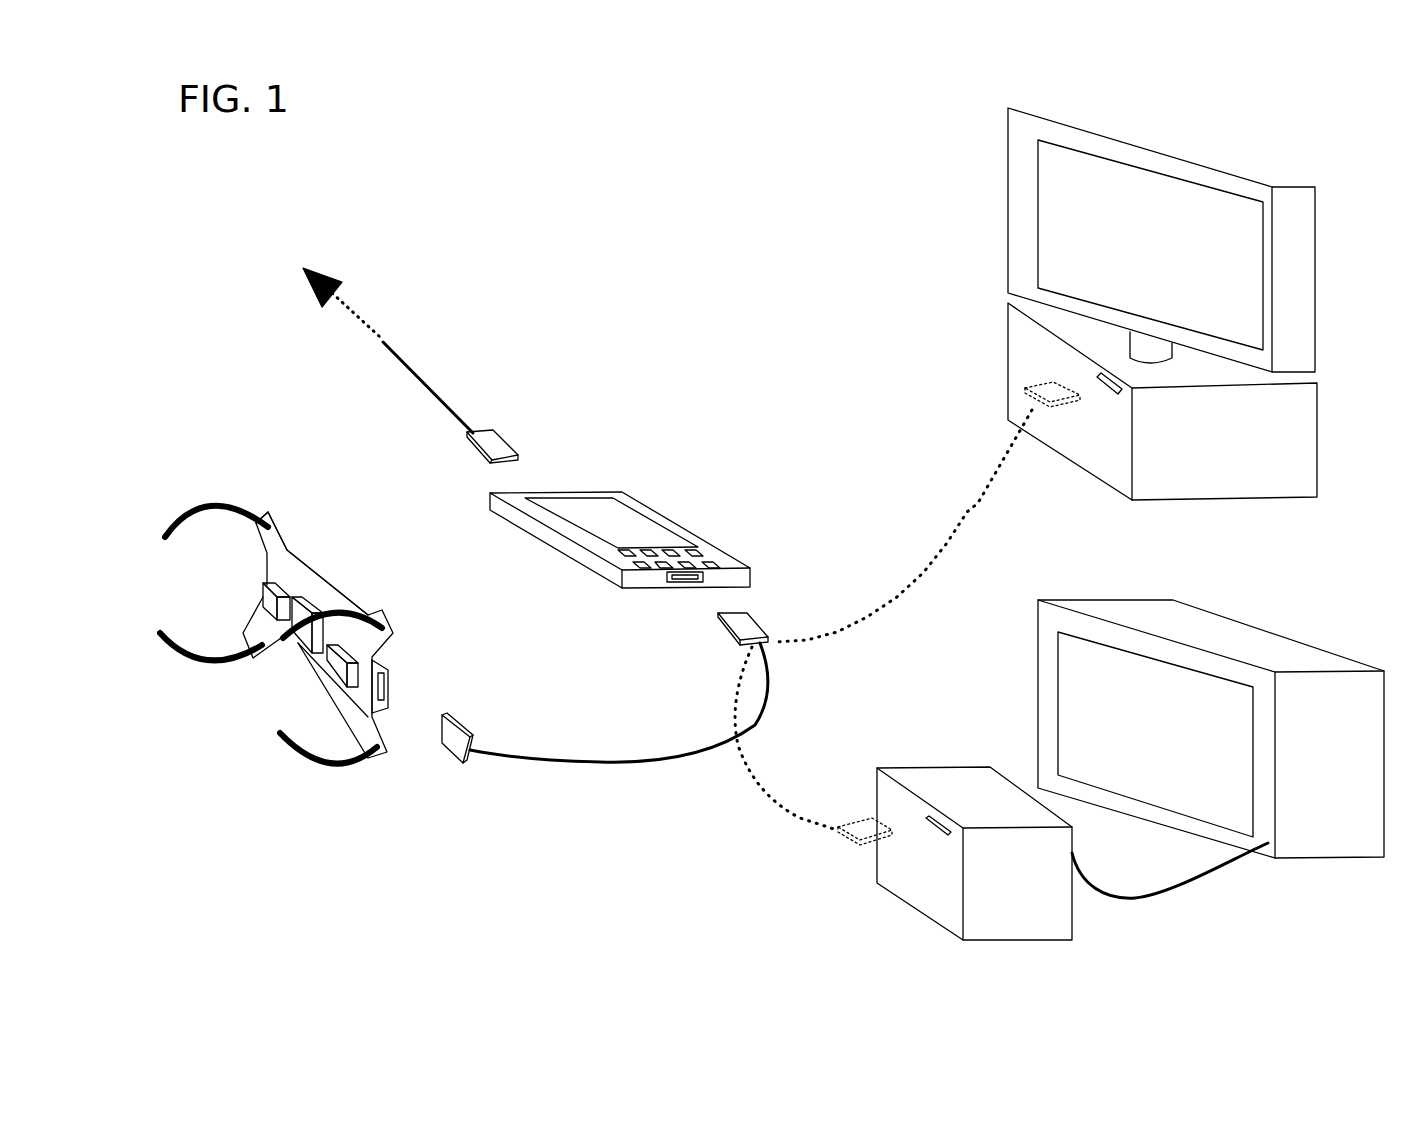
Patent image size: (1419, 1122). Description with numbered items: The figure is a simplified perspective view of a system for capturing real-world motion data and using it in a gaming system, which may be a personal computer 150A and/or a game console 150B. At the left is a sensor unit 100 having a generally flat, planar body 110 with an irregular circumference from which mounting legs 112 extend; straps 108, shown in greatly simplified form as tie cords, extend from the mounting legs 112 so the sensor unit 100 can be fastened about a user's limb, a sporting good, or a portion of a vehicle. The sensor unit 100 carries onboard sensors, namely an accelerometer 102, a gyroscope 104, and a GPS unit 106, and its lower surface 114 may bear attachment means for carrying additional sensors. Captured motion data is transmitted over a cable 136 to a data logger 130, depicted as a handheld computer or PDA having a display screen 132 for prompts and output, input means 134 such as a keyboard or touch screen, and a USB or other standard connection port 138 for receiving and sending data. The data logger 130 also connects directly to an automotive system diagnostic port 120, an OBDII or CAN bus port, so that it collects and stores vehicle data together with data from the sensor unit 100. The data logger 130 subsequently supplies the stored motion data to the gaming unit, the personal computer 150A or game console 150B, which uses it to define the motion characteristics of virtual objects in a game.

The sensor unit 100 is at (263, 450).
The accelerometer 102 is at (337, 672).
The gyroscope 104 is at (303, 633).
The GPS unit 106 is at (263, 598).
The straps 108 is at (215, 507).
The housing body 110 is at (303, 578).
The mounting legs 112 is at (273, 540).
The lower surface 114 is at (317, 598).
The automotive system diagnostic port 120 is at (279, 227).
The data logger 130 is at (686, 489).
The display screen 132 is at (583, 510).
The input means 134 is at (700, 558).
The cable 136 is at (627, 762).
The connection port 138 is at (693, 582).
The personal computer 150A is at (970, 358).
The game console 150B is at (870, 906).